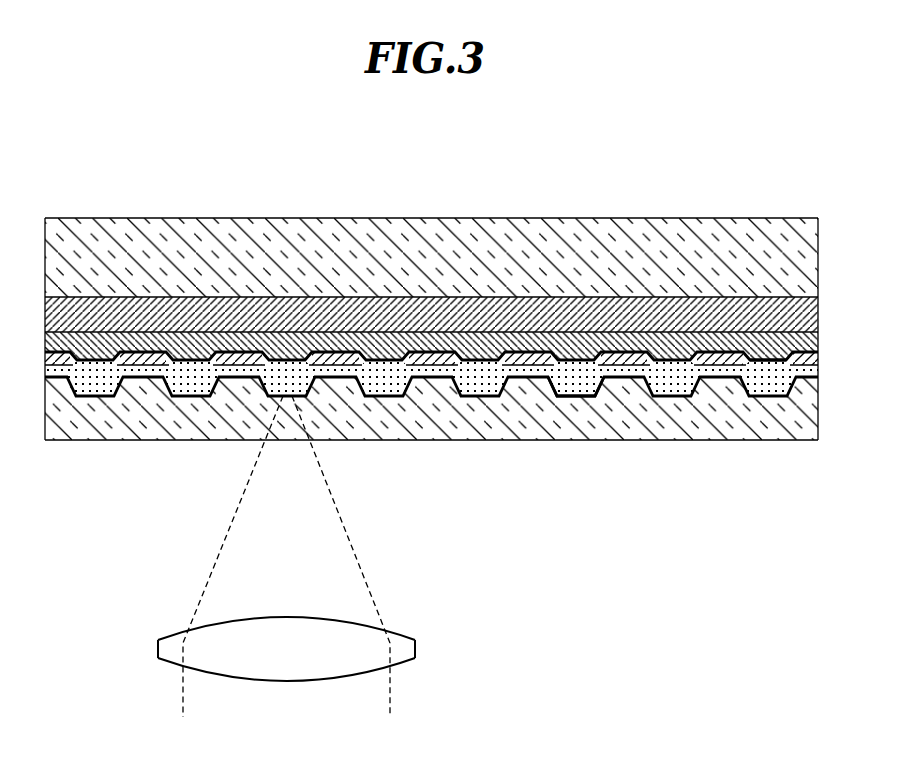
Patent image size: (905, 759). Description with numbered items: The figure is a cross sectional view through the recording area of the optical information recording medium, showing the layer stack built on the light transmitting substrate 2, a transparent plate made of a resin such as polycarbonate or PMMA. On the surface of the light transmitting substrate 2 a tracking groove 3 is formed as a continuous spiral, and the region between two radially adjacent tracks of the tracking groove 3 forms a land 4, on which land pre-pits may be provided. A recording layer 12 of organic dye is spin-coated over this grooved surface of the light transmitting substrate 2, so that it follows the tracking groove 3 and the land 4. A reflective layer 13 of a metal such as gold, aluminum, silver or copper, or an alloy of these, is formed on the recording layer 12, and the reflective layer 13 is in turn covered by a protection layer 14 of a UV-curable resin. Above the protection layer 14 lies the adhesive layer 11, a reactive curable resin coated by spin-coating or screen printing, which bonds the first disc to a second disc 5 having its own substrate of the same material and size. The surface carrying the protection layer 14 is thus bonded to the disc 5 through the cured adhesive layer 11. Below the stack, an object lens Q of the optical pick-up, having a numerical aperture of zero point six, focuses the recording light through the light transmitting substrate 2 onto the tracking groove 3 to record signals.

The light transmitting substrate 2 is at (486, 441).
The tracking groove 3 is at (388, 398).
The land 4 is at (623, 374).
The disc 5 is at (398, 226).
The adhesive layer 11 is at (150, 314).
The recording layer 12 is at (571, 397).
The reflective layer 13 is at (768, 374).
The protection layer 14 is at (93, 356).
The object lens Q is at (415, 649).